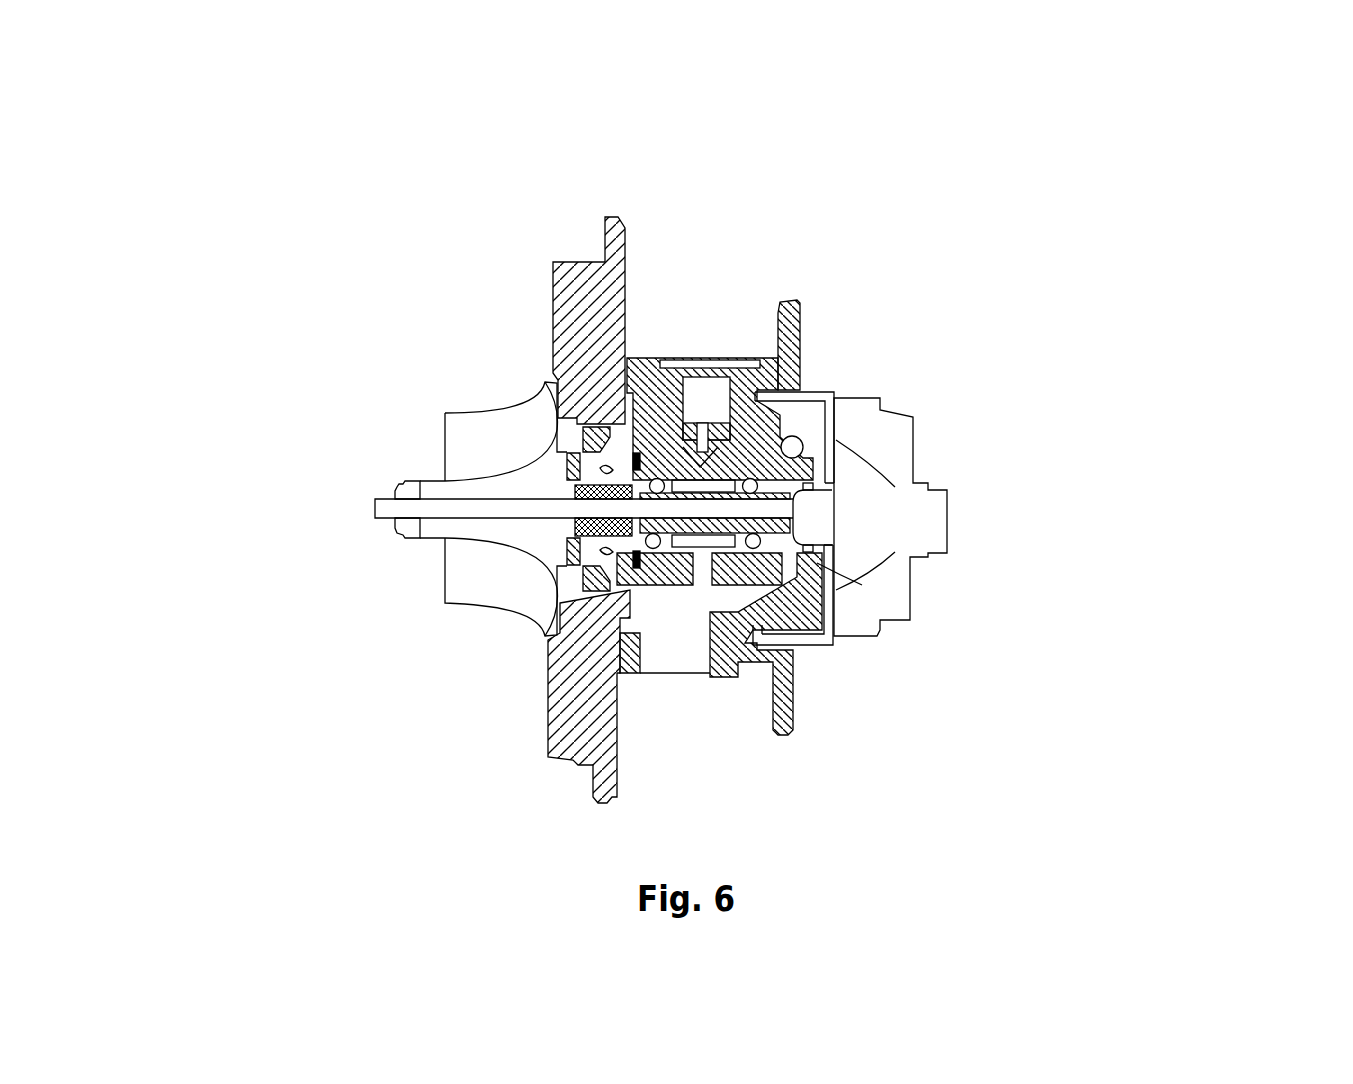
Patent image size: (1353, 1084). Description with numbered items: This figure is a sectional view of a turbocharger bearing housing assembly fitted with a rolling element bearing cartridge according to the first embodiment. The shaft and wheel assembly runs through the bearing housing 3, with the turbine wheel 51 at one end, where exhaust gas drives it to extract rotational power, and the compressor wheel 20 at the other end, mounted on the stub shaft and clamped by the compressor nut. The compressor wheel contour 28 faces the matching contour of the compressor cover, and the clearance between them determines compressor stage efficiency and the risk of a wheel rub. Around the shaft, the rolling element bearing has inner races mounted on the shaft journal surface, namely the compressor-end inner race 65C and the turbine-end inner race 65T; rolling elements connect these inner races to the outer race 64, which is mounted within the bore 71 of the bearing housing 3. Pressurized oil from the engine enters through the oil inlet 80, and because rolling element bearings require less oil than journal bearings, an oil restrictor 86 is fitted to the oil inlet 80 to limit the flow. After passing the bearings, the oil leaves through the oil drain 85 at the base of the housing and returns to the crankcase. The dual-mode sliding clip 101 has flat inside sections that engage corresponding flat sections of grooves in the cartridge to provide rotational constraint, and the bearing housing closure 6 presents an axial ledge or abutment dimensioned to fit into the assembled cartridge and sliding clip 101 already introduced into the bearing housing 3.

The bearing housing 3 is at (800, 350).
The bearing housing closure 6 is at (625, 282).
The compressor wheel 20 is at (517, 552).
The compressor wheel contour 28 is at (522, 613).
The turbine wheel 51 is at (883, 478).
The outer race 64 is at (810, 393).
The turbine-end inner race 65T is at (792, 523).
The compressor-end inner race 65C is at (817, 563).
The bore 71 is at (662, 462).
The oil inlet 80 is at (693, 413).
The oil drain 85 is at (677, 640).
The oil restrictor 86 is at (723, 418).
The dual-mode sliding clip 101 is at (633, 450).